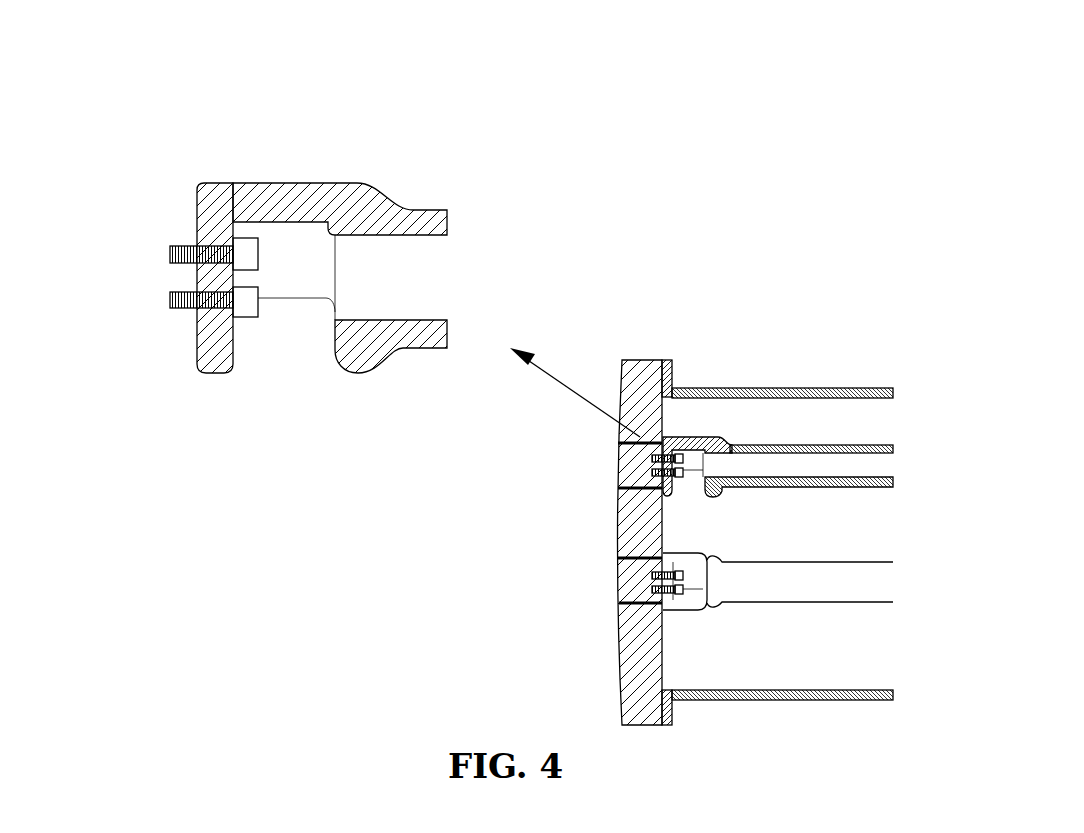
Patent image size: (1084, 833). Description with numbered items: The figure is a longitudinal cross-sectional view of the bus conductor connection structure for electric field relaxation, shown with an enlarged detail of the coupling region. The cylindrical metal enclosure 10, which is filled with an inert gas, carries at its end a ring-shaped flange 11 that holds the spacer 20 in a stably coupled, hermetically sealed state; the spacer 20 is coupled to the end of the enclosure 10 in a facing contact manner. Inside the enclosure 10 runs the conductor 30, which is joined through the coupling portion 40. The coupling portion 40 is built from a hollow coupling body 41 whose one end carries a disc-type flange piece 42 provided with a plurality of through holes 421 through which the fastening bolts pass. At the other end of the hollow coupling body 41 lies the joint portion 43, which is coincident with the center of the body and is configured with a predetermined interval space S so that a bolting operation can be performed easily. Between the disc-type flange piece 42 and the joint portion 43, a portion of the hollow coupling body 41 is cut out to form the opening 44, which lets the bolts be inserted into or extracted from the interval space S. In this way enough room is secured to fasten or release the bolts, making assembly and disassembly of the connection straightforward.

The enclosure 10 is at (793, 390).
The flange 11 is at (673, 378).
The spacer 20 is at (642, 373).
The conductor 30 is at (428, 350).
The coupling portion 40 is at (221, 149).
The hollow coupling body 41 is at (363, 182).
The disc-type flange piece 42 is at (197, 330).
The through hole 421 is at (220, 243).
The joint portion 43 is at (402, 180).
The opening 44 is at (318, 343).
The interval space S is at (292, 300).